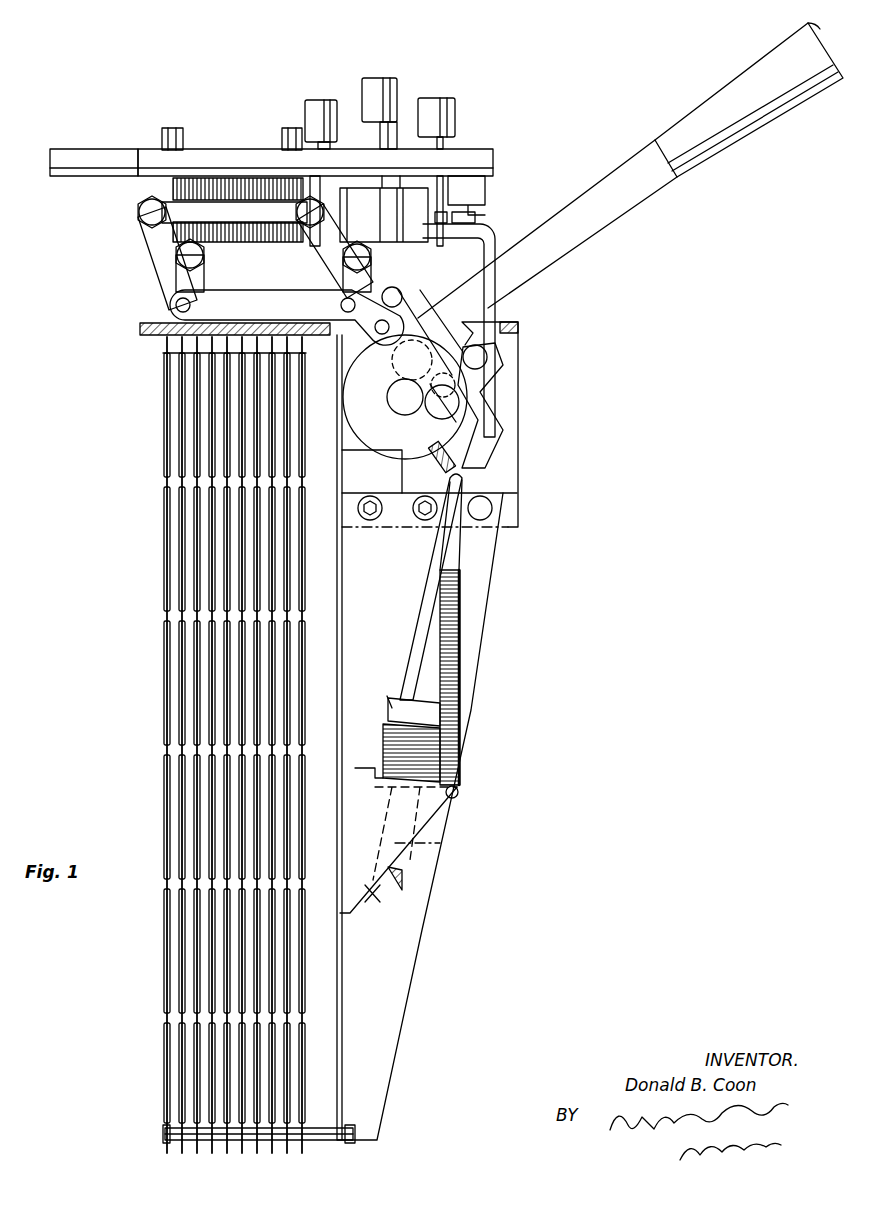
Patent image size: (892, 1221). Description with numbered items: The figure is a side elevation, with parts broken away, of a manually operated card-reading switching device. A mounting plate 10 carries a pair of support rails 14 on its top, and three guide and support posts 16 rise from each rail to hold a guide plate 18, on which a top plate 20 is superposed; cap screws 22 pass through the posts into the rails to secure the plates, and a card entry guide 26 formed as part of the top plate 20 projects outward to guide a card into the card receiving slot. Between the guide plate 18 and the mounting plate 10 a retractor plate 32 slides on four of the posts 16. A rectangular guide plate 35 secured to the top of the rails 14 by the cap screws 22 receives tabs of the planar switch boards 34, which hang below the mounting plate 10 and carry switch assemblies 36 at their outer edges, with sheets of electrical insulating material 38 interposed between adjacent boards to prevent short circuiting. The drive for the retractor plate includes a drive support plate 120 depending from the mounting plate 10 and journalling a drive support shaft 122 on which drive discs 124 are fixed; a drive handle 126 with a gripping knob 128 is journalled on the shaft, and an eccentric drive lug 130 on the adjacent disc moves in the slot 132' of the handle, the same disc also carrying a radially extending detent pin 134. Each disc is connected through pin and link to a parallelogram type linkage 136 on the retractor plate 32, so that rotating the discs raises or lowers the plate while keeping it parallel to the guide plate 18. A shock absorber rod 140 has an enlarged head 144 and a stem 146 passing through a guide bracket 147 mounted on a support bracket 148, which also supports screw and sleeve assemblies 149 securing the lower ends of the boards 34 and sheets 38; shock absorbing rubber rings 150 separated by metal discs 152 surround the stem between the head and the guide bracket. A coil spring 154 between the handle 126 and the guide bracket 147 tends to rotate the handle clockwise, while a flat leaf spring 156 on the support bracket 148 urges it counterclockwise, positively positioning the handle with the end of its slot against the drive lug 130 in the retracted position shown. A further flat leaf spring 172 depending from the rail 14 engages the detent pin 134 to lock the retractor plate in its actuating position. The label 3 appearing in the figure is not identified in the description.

The bar assembly 3 is at (163, 567).
The mounting plate 10 is at (140, 331).
The support rails 14 is at (150, 303).
The guide and support posts 16 is at (171, 190).
The guide plate 18 is at (490, 167).
The top plate 20 is at (470, 152).
The cap screws 22 is at (172, 128).
The card entry guide 26 is at (90, 160).
The retractor plate 32 is at (258, 212).
The planar switch boards 34 is at (164, 346).
The rectangular guide plate 35 is at (140, 243).
The switch assemblies 36 is at (172, 449).
The sheets of electrical insulating material 38 is at (215, 1152).
The drive support plate 120 is at (520, 411).
The drive support shaft 122 is at (402, 411).
The drive discs 124 is at (348, 411).
The drive handle 126 is at (560, 248).
The gripping knob 128 is at (746, 132).
The drive lug 130 is at (458, 362).
The slot 132' is at (402, 368).
The detent pin 134 is at (437, 455).
The parallelogram type linkage 136 is at (145, 270).
The rod 140 is at (432, 576).
The enlarged head 144 is at (394, 706).
The stem 146 is at (425, 850).
The guide bracket 147 is at (399, 857).
The support bracket 148 is at (342, 1013).
The screw and sleeve assemblies 149 is at (320, 1145).
The shock absorbing rubber rings 150 is at (388, 712).
The metal discs 152 is at (384, 745).
The coil spring 154 is at (462, 776).
The flat leaf spring 156 is at (402, 483).
The flat leaf spring 172 is at (488, 396).